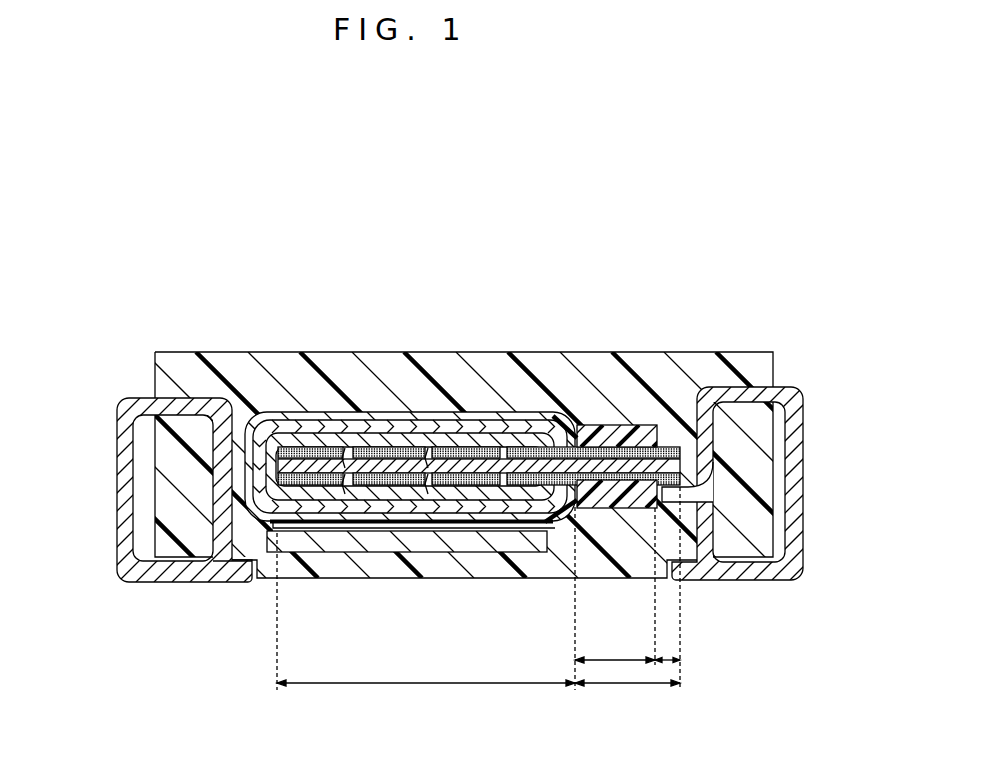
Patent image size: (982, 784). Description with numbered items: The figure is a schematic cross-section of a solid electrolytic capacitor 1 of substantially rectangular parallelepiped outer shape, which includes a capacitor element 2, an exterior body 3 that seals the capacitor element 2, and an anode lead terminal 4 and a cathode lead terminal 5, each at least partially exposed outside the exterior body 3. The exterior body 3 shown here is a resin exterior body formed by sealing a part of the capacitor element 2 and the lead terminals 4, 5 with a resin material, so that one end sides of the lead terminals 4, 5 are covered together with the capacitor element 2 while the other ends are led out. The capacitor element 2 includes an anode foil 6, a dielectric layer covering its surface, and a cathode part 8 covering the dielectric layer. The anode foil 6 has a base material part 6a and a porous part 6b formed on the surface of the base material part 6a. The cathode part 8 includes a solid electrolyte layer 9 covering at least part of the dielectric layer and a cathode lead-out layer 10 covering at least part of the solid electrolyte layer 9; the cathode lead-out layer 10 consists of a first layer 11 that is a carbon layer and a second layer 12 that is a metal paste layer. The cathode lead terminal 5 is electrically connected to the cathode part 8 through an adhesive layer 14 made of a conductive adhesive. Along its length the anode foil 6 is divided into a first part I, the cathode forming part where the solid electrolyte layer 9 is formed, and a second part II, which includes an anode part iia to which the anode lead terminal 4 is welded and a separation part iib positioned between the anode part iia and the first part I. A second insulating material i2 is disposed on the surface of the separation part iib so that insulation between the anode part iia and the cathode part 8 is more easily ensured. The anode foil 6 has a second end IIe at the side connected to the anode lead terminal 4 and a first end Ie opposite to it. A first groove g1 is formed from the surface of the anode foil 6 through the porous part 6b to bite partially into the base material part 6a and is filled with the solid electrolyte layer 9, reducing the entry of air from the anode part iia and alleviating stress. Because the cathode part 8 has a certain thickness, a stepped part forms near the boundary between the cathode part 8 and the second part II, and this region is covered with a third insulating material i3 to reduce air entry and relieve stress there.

The solid electrolytic capacitor 1 is at (776, 318).
The capacitor element 2 is at (328, 208).
The exterior body 3 is at (202, 375).
The anode lead terminal 4 is at (791, 397).
The cathode lead terminal 5 is at (125, 491).
The anode foil 6 is at (522, 255).
The base material part 6a is at (540, 478).
The porous part 6b is at (475, 452).
The cathode part 8 is at (273, 253).
The solid electrolyte layer 9 is at (368, 462).
The cathode lead-out layer 10 is at (252, 303).
The first layer 11 is at (283, 437).
The second layer 12 is at (328, 417).
The adhesive layer 14 is at (385, 548).
The second insulating material i2 is at (608, 432).
The third insulating material i3 is at (570, 428).
The first groove g1 is at (345, 482).
The first part I is at (426, 606).
The second part II is at (627, 600).
The anode part iia is at (669, 657).
The separation part iib is at (615, 586).
The first end Ie is at (247, 522).
The second end IIe is at (699, 493).